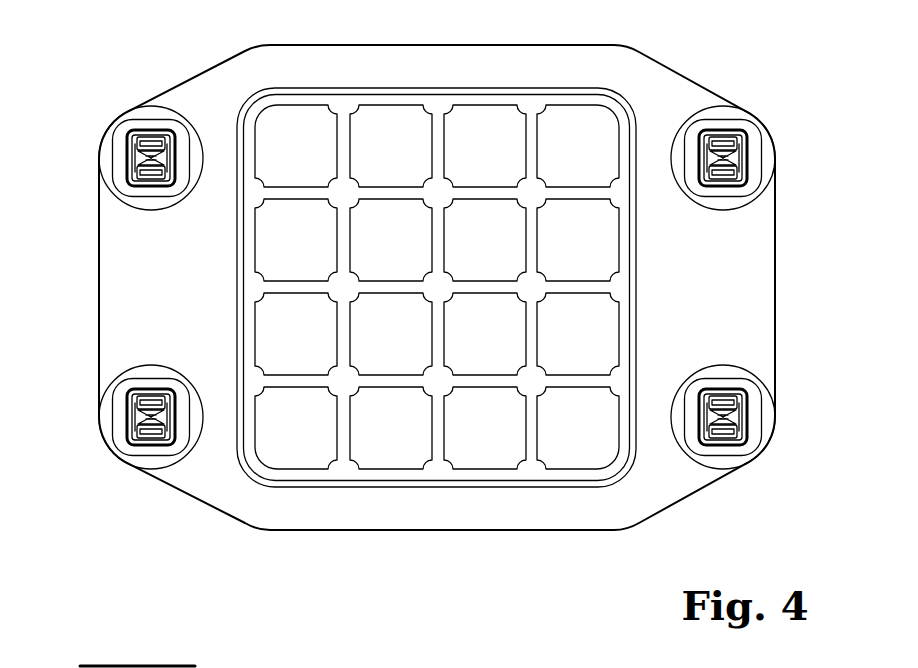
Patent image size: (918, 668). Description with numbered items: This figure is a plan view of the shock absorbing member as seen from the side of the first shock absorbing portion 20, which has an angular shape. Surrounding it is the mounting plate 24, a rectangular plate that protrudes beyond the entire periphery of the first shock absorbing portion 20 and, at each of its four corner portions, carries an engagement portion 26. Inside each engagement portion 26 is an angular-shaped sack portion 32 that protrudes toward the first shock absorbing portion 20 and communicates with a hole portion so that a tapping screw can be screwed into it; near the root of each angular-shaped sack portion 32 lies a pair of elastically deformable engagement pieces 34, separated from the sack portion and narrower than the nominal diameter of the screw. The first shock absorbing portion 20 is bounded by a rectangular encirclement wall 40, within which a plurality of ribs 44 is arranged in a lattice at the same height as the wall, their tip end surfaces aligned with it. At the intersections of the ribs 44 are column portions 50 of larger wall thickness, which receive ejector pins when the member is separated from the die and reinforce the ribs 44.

The first shock absorbing portion 20 is at (639, 293).
The mounting plate 24 is at (776, 268).
The engagement portions 26 is at (150, 106).
The angular-shaped sack portions 32 is at (168, 182).
The engagement pieces 34 is at (153, 192).
The encirclement wall 40 is at (556, 475).
The ribs 44 is at (390, 378).
The column portions 50 is at (540, 298).